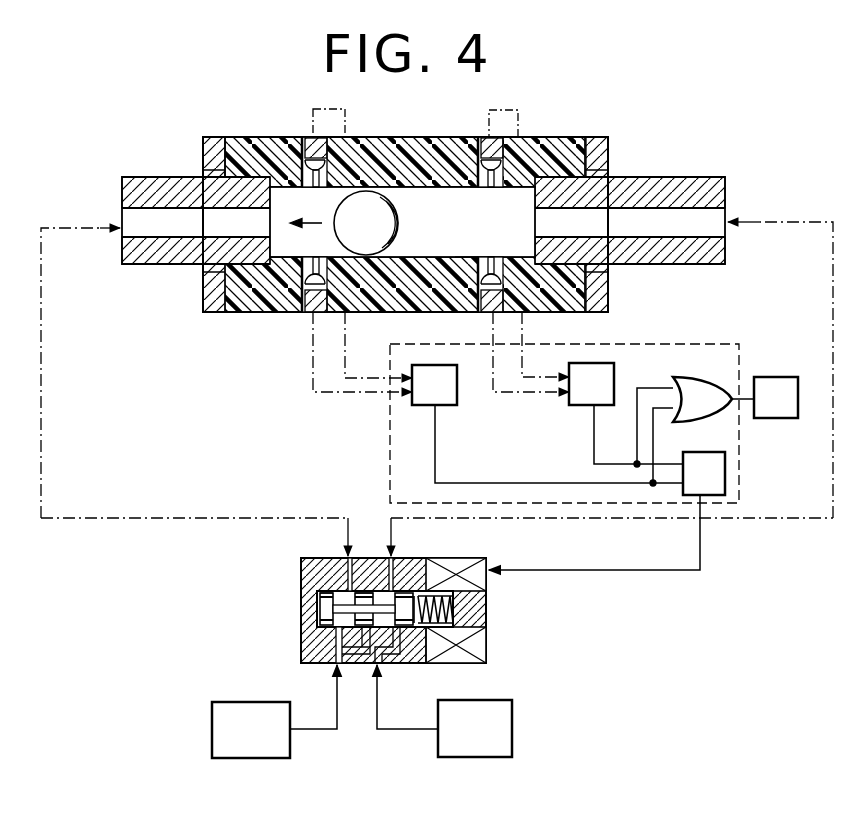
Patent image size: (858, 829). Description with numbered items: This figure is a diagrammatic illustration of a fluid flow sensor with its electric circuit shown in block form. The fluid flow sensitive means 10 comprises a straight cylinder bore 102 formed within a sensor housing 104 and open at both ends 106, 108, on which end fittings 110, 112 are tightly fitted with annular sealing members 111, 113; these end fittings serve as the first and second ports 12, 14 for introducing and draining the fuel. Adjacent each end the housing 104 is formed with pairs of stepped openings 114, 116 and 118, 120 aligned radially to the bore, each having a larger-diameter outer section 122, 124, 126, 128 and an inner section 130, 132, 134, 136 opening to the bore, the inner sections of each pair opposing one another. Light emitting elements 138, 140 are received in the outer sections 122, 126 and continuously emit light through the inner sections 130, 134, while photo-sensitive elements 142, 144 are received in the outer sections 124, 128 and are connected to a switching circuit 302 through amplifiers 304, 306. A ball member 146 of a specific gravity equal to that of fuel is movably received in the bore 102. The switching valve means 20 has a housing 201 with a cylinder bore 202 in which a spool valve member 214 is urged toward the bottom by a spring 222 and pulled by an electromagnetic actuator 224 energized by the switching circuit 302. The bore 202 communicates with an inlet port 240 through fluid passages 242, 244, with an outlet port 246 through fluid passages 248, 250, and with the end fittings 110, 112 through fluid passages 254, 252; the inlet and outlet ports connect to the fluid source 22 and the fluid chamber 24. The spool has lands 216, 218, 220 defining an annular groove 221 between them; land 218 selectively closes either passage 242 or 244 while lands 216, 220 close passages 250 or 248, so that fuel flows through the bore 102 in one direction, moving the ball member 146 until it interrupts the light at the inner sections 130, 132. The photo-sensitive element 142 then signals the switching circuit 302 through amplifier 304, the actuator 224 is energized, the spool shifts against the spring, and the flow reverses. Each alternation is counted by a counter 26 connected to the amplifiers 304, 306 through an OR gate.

The fluid flow sensitive means 10 is at (564, 130).
The first port 12 is at (173, 247).
The second port 14 is at (632, 245).
The switching valve means 20 is at (393, 606).
The fluid source 22 is at (444, 711).
The fluid chamber 24 is at (274, 711).
The counter 26 is at (735, 399).
The cylinder bore 102 is at (438, 186).
The sensor housing 104 is at (412, 137).
The end 106 is at (256, 185).
The end 108 is at (590, 152).
The end fitting 110 is at (166, 177).
The annular sealing member 111 is at (242, 152).
The end fitting 112 is at (705, 177).
The annular sealing member 113 is at (584, 178).
The stepped opening 114 is at (314, 139).
The stepped opening 116 is at (306, 320).
The stepped opening 118 is at (491, 139).
The stepped opening 120 is at (485, 318).
The outer section 122 is at (346, 138).
The outer section 124 is at (313, 345).
The outer section 126 is at (512, 138).
The outer section 128 is at (522, 322).
The inner section 130 is at (316, 187).
The inner section 132 is at (306, 234).
The inner section 134 is at (493, 188).
The inner section 136 is at (492, 256).
The light emitting element 138 is at (276, 192).
The light emitting element 140 is at (484, 188).
The photo-sensitive element 142 is at (290, 282).
The photo-sensitive element 144 is at (478, 275).
The ball member 146 is at (399, 226).
The housing 201 is at (301, 562).
The cylinder bore 202 is at (412, 596).
The spool valve member 214 is at (318, 606).
The land 216 is at (491, 595).
The land 218 is at (364, 596).
The land 220 is at (327, 596).
The annular groove 221 is at (302, 656).
The spring 222 is at (440, 606).
The electromagnetic actuator 224 is at (486, 655).
The inlet port 240 is at (381, 658).
The fluid passage 242 is at (432, 654).
The fluid passage 244 is at (365, 656).
The outlet port 246 is at (336, 663).
The fluid passage 248 is at (345, 640).
The fluid passage 250 is at (402, 655).
The fluid passage 252 is at (392, 532).
The fluid passage 254 is at (350, 532).
The switching circuit 302 is at (580, 479).
The amplifier 304 is at (434, 385).
The amplifier 306 is at (591, 384).